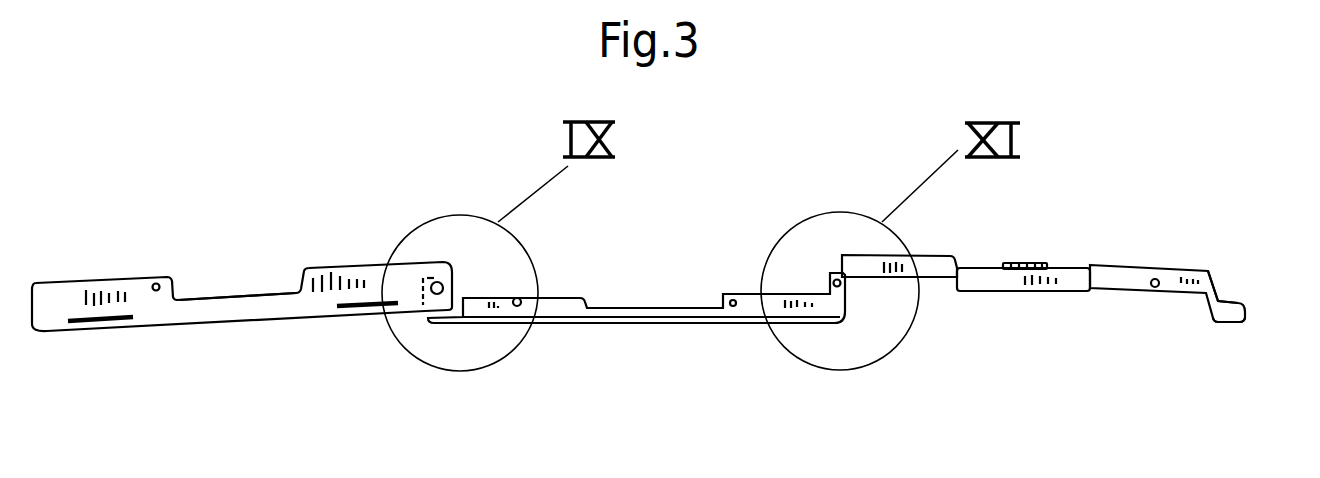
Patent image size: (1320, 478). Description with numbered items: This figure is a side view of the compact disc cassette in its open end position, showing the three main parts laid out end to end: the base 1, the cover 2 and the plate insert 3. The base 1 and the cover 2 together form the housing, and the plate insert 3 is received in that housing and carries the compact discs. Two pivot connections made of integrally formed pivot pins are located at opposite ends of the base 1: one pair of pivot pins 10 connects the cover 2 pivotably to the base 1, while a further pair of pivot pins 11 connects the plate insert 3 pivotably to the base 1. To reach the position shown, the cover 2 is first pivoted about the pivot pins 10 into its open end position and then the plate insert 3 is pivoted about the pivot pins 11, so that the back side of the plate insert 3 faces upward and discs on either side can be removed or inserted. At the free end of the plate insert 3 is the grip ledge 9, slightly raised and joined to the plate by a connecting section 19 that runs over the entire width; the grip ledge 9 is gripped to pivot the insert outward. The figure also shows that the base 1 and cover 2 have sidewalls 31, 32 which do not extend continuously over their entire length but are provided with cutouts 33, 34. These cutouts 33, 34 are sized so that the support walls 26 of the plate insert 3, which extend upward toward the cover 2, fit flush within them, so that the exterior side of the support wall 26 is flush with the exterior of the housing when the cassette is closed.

The base 1 is at (488, 328).
The cover 2 is at (80, 333).
The plate insert 3 is at (1152, 258).
The grip ledge 9 is at (1236, 325).
The pivot pins 10 is at (433, 283).
The pivot pins 11 is at (840, 287).
The connecting section 19 is at (1219, 298).
The support wall 26 is at (987, 281).
The sidewall 31 is at (572, 309).
The sidewall 32 is at (152, 298).
The cutout 33 is at (629, 306).
The cutout 34 is at (270, 293).